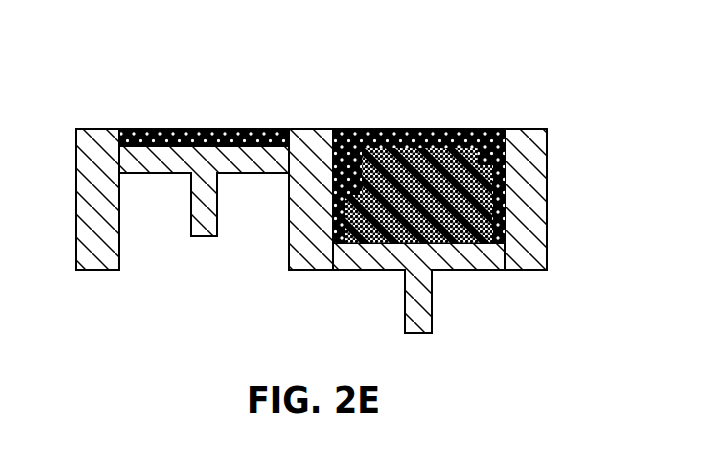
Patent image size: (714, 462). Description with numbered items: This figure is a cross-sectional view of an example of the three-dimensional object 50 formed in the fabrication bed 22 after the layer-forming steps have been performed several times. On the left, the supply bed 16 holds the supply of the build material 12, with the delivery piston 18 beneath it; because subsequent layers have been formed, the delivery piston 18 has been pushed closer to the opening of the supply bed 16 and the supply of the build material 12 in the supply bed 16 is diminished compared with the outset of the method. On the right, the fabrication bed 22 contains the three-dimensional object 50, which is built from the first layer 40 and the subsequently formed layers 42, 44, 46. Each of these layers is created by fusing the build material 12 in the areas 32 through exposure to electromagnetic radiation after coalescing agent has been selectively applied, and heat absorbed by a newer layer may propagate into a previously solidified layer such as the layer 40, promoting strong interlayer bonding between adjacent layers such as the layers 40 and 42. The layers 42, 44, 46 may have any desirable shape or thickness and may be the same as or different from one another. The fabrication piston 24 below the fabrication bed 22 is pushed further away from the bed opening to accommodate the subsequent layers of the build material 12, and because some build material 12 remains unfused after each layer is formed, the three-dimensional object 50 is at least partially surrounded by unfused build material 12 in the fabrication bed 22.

The build material 12 is at (187, 128).
The supply bed 16 is at (128, 128).
The delivery piston 18 is at (190, 231).
The fabrication bed 22 is at (505, 173).
The fabrication piston 24 is at (418, 299).
The areas or portions 32 is at (340, 122).
The layer 40 is at (505, 225).
The subsequent layer 42 is at (505, 205).
The subsequent layer 44 is at (402, 130).
The subsequent layer 46 is at (410, 130).
The 3D object 50 is at (432, 122).